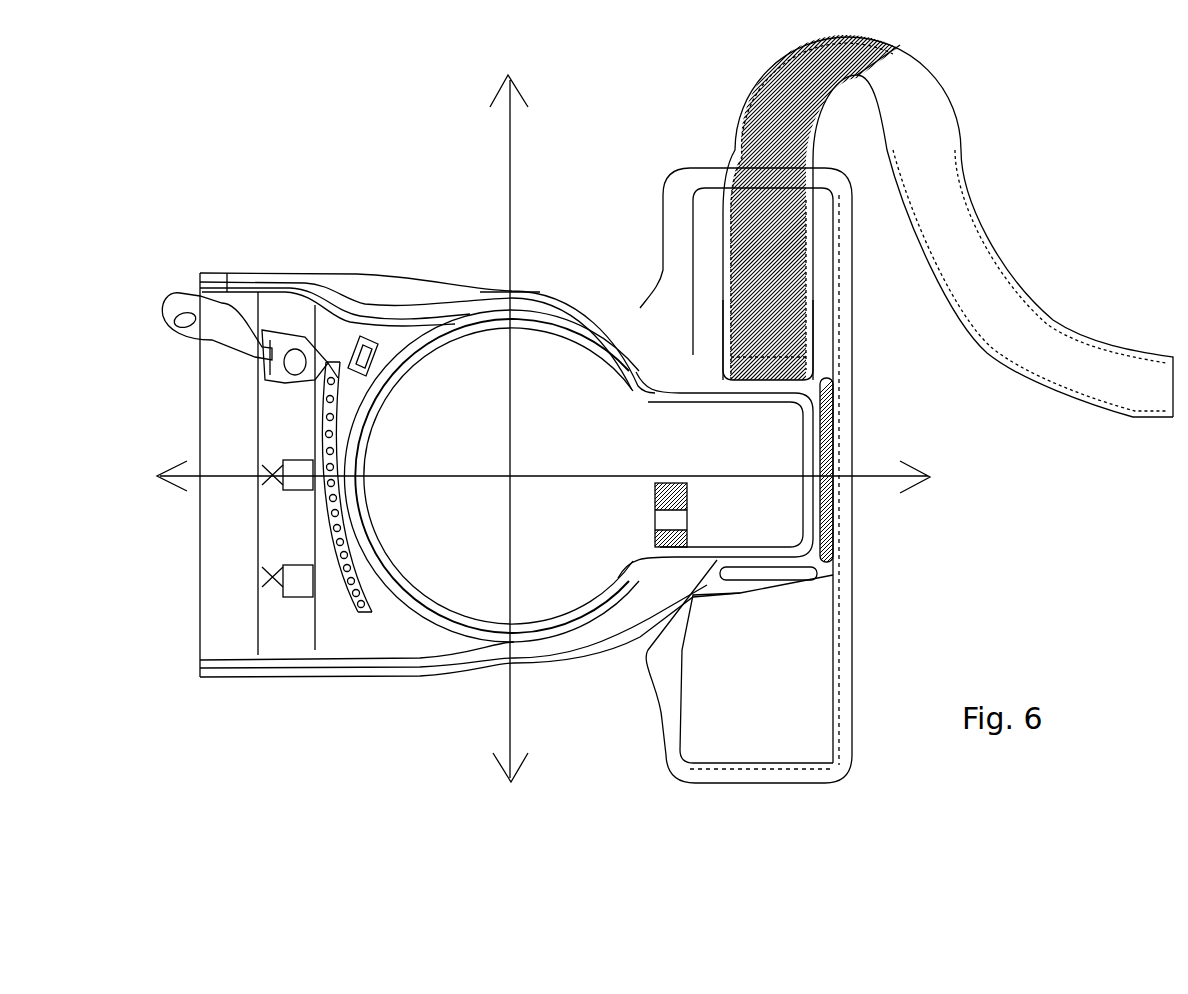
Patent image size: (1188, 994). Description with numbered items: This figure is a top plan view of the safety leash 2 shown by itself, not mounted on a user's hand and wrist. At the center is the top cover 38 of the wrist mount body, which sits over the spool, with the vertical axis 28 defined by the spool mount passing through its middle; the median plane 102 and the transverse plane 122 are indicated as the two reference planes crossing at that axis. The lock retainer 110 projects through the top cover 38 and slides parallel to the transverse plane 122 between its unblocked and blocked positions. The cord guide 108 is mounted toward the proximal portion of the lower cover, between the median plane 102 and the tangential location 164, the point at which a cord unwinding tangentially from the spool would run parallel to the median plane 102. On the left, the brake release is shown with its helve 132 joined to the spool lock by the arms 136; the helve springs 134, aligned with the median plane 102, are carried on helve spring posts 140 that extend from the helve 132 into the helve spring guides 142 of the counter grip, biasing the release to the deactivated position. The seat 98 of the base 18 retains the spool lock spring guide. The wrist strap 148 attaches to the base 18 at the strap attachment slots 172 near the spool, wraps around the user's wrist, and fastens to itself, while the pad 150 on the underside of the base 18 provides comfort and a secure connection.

The safety leash 2 is at (373, 157).
The base 18 is at (397, 615).
The vertical axis 28 is at (512, 476).
The top cover 38 is at (440, 563).
The seat portion 98 is at (813, 527).
The median plane 102 is at (640, 477).
The cord guide 108 is at (392, 365).
The lock retainer 110 is at (660, 517).
The transverse plane 122 is at (513, 202).
The helve 132 is at (210, 393).
The helve springs 134 is at (275, 578).
The arms 136 is at (363, 277).
The helve spring posts 140 is at (267, 487).
The helve spring guides 142 is at (297, 593).
The wrist strap 148 is at (987, 313).
The pad 150 is at (780, 697).
The tangential location 164 is at (502, 283).
The strap attachment slots 172 is at (795, 372).